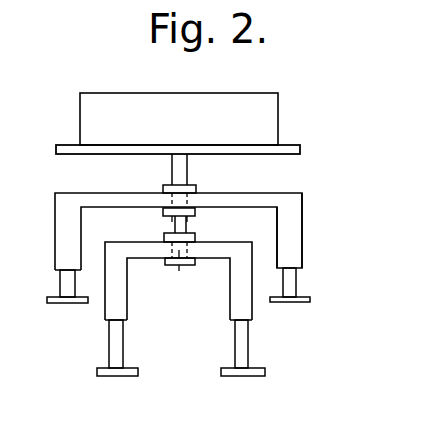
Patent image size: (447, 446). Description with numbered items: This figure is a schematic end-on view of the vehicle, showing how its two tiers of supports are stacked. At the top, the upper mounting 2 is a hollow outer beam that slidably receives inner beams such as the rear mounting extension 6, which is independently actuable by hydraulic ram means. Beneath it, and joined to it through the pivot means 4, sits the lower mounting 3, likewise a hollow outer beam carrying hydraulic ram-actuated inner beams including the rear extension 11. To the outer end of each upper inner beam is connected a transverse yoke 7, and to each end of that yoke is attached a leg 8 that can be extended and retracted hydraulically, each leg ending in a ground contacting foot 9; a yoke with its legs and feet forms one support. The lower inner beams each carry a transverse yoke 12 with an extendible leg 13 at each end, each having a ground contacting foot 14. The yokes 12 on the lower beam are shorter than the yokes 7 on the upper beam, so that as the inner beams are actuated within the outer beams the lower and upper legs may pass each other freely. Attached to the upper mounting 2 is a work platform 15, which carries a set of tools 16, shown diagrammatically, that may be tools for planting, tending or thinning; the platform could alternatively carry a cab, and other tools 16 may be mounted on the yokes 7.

The upper mounting 2 is at (198, 183).
The lower mounting 3 is at (165, 265).
The pivot means 4 is at (177, 228).
The first rear mounting extension 6 is at (177, 194).
The transverse yoke 7 is at (257, 194).
The leg 8 is at (290, 230).
The ground contacting foot 9 is at (300, 298).
The second rear mounting extension 11 is at (179, 273).
The transverse yoke 12 is at (213, 250).
The extendible leg 13 is at (245, 306).
The ground contacting foot 14 is at (265, 370).
The work platform 15 is at (300, 150).
The tools 16 is at (260, 113).